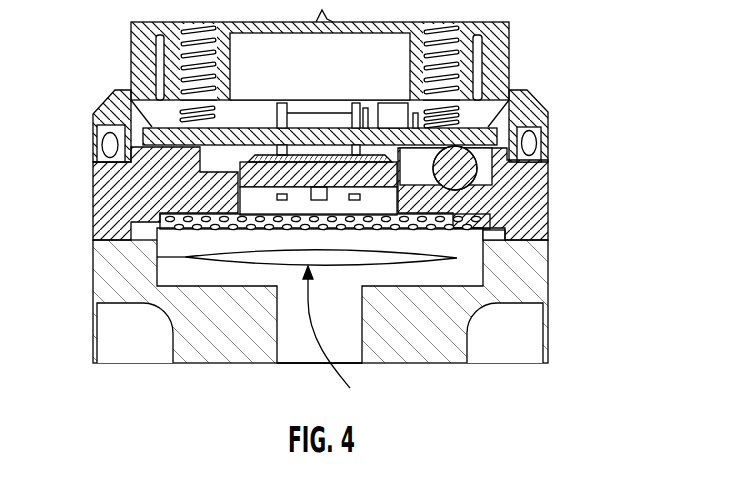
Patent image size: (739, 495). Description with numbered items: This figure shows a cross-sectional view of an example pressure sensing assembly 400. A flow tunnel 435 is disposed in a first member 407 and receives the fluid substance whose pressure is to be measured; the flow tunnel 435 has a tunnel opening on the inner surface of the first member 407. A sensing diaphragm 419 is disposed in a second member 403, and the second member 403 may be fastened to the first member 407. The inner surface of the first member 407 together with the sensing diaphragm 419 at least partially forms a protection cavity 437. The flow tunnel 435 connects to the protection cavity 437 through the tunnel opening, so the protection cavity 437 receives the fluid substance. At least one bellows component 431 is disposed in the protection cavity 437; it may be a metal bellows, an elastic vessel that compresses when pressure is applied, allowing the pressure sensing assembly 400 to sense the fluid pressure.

The pressure sensing assembly 400 is at (105, 61).
The second member 403 is at (190, 196).
The sensing diaphragm 419 is at (176, 228).
The first member 407 is at (106, 293).
The protection cavity 437 is at (444, 273).
The bellows component 431 is at (343, 336).
The flow tunnel 435 is at (303, 356).